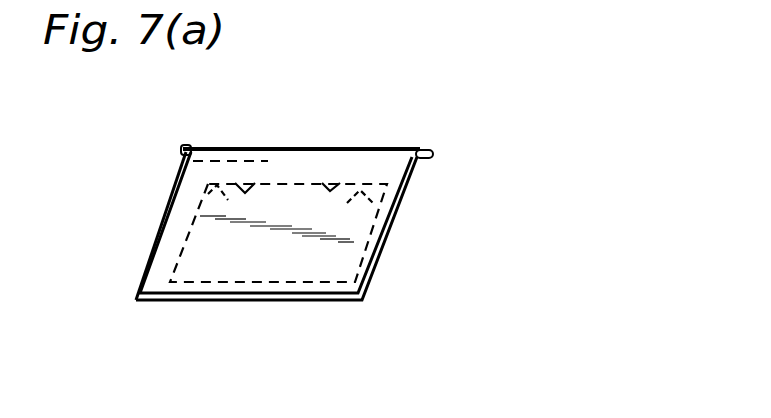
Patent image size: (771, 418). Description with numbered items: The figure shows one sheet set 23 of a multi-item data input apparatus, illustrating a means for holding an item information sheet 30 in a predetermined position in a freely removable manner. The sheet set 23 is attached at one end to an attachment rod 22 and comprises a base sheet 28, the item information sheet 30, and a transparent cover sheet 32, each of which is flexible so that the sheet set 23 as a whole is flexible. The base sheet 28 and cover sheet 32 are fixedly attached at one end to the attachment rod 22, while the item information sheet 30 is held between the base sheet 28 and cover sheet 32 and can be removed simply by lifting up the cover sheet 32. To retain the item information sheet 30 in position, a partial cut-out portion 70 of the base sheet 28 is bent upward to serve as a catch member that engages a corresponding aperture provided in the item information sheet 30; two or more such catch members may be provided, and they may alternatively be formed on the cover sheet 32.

The attachment rod 22 is at (433, 153).
The sheet set 23 is at (175, 191).
The base sheet 28 is at (346, 301).
The item information sheet 30 is at (370, 272).
The cover sheet 32 is at (140, 284).
The partial cut-out portion 70 is at (330, 185).